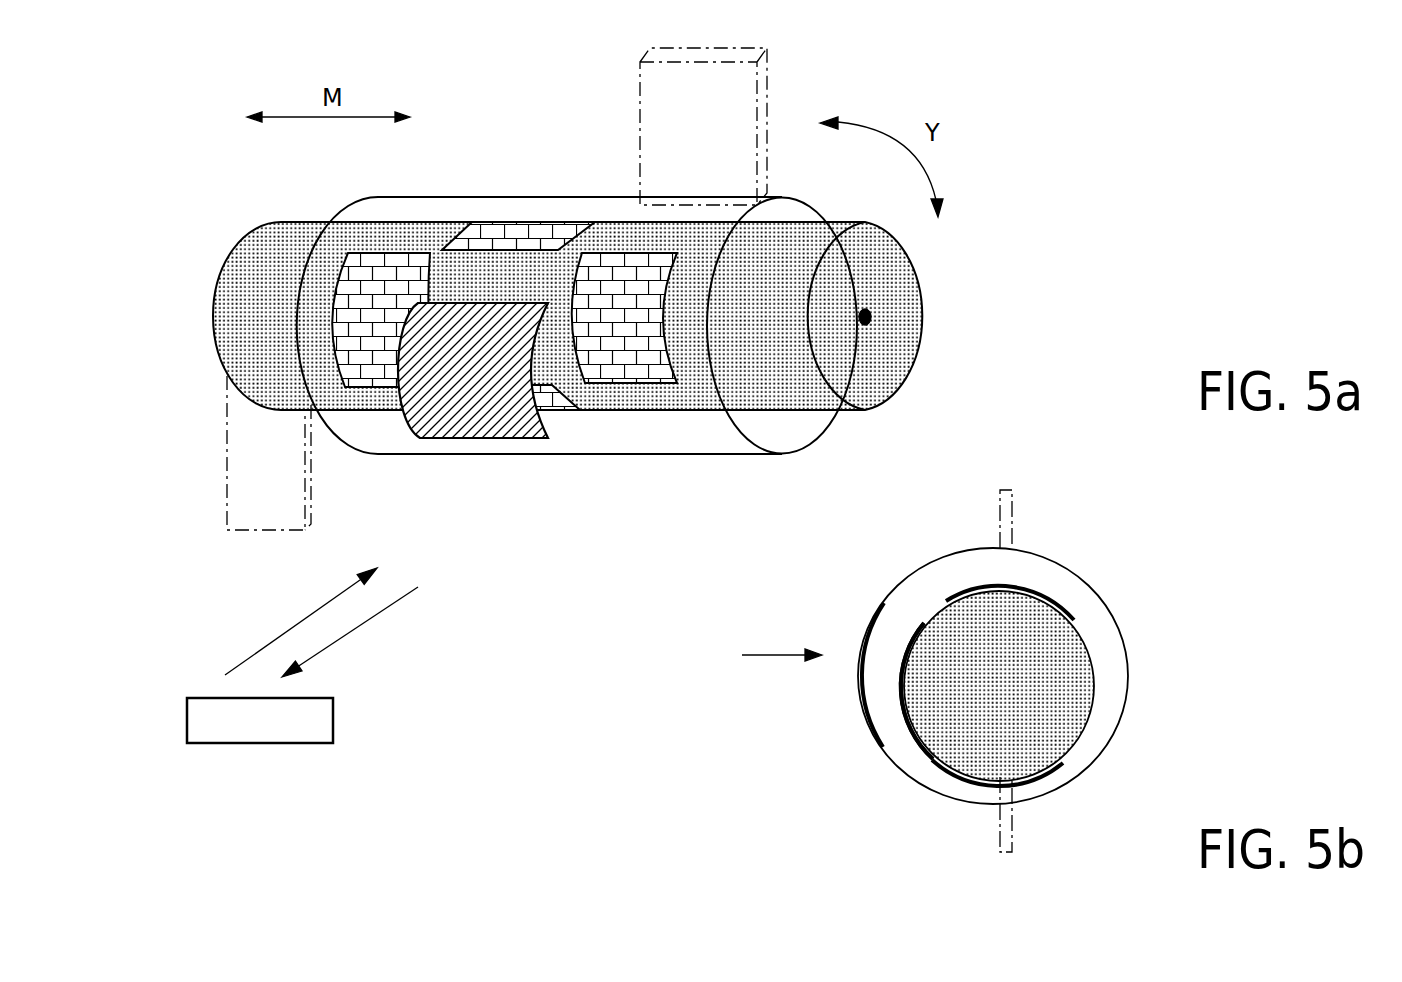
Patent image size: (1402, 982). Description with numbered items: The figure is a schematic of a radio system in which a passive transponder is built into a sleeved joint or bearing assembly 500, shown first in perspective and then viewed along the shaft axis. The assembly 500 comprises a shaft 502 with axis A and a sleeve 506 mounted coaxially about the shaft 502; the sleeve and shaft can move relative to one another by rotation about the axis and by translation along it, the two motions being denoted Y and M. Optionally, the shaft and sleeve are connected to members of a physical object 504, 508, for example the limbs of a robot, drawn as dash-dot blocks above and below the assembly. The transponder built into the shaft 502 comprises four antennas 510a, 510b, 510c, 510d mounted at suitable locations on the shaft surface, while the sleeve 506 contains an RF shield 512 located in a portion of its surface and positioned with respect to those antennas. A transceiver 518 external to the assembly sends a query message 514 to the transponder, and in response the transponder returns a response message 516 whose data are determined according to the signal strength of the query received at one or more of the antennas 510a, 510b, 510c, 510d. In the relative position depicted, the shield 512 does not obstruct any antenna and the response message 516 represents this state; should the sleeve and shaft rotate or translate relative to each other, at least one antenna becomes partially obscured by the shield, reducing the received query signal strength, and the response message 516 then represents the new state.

In FIG. 5A, the assembly 500 is at (1023, 156).
In FIG. 5A, the shaft 502 is at (935, 318).
In FIG. 5B, the shaft 502 is at (1083, 660).
In FIG. 5A, the member of a physical object 504 is at (265, 515).
In FIG. 5B, the member of a physical object 504 is at (996, 838).
In FIG. 5A, the sleeve 506 is at (452, 197).
In FIG. 5B, the sleeve 506 is at (1126, 700).
In FIG. 5A, the member of a physical object 508 is at (762, 72).
In FIG. 5B, the member of a physical object 508 is at (1012, 503).
In FIG. 5A, the antenna 510a is at (515, 225).
In FIG. 5B, the antenna 510a is at (1062, 605).
In FIG. 5A, the antenna 510b is at (561, 408).
In FIG. 5B, the antenna 510b is at (1053, 773).
In FIG. 5A, the antenna 510c is at (372, 388).
In FIG. 5B, the antenna 510c is at (915, 740).
In FIG. 5A, the antenna 510d is at (633, 386).
In FIG. 5B, the antenna 510d is at (865, 726).
In FIG. 5A, the RF shield 512 is at (465, 430).
In FIG. 5B, the RF shield 512 is at (860, 692).
In FIG. 5A, the query message 514 is at (250, 657).
In FIG. 5B, the query message 514 is at (770, 652).
In FIG. 5A, the response message 516 is at (373, 617).
In FIG. 5A, the transceiver 518 is at (187, 718).